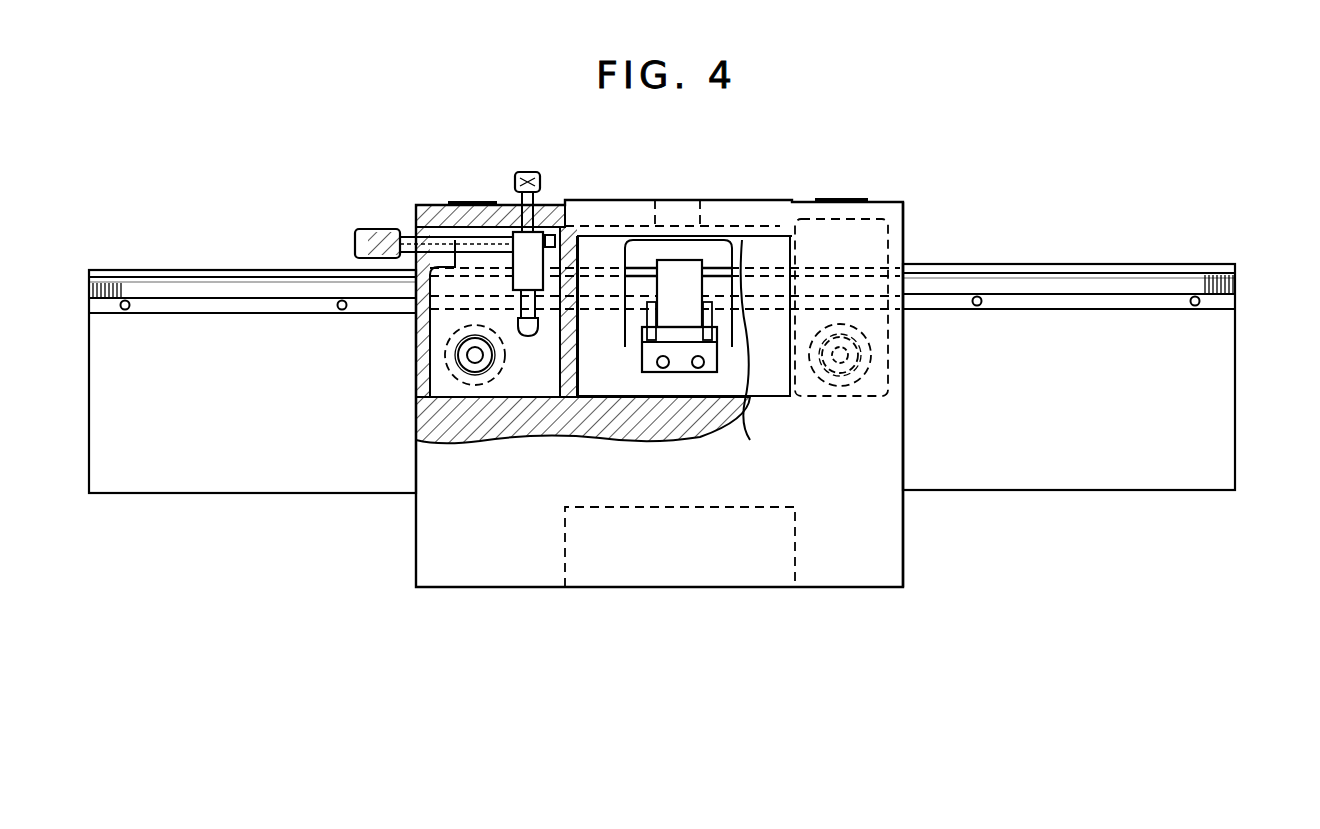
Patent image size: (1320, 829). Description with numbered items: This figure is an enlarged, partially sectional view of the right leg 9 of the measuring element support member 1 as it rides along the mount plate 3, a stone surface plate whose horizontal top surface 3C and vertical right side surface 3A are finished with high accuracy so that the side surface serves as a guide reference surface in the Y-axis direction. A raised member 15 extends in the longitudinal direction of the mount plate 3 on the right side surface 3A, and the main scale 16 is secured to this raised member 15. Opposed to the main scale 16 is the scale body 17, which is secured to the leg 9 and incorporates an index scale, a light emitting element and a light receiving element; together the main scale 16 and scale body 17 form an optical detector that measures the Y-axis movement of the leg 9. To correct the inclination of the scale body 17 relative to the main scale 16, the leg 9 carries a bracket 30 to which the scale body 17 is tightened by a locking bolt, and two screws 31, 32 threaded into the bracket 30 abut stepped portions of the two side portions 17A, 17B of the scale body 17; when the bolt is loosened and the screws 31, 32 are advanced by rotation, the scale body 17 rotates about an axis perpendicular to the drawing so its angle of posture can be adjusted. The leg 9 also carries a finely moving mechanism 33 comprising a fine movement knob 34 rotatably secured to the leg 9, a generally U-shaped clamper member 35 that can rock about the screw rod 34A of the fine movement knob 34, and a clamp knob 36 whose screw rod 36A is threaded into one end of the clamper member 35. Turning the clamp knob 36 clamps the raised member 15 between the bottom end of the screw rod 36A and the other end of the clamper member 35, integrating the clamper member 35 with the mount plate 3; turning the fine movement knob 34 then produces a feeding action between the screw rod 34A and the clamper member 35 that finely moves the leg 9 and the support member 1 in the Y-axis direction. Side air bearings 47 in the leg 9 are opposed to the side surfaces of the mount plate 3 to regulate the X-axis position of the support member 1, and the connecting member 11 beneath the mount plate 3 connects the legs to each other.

The measuring element support member 1 is at (430, 546).
The mount plate 3 is at (98, 342).
The right side surface 3A is at (1227, 410).
The top surface 3C is at (184, 269).
The leg 9 is at (892, 517).
The connecting member 11 is at (797, 553).
The raised member 15 is at (1230, 307).
The main scale 16 is at (957, 290).
The scale body 17 is at (677, 258).
The side portion 17A is at (647, 318).
The side portion 17B is at (716, 325).
The bracket 30 is at (690, 375).
The screw 31 is at (656, 374).
The screw 32 is at (745, 380).
The finely moving mechanism 33 is at (468, 205).
The fine movement knob 34 is at (371, 233).
The screw rod 34A is at (554, 236).
The clamper member 35 is at (505, 277).
The clamp knob 36 is at (528, 170).
The screw rod 36A is at (521, 222).
The side air bearing 47 is at (440, 370).